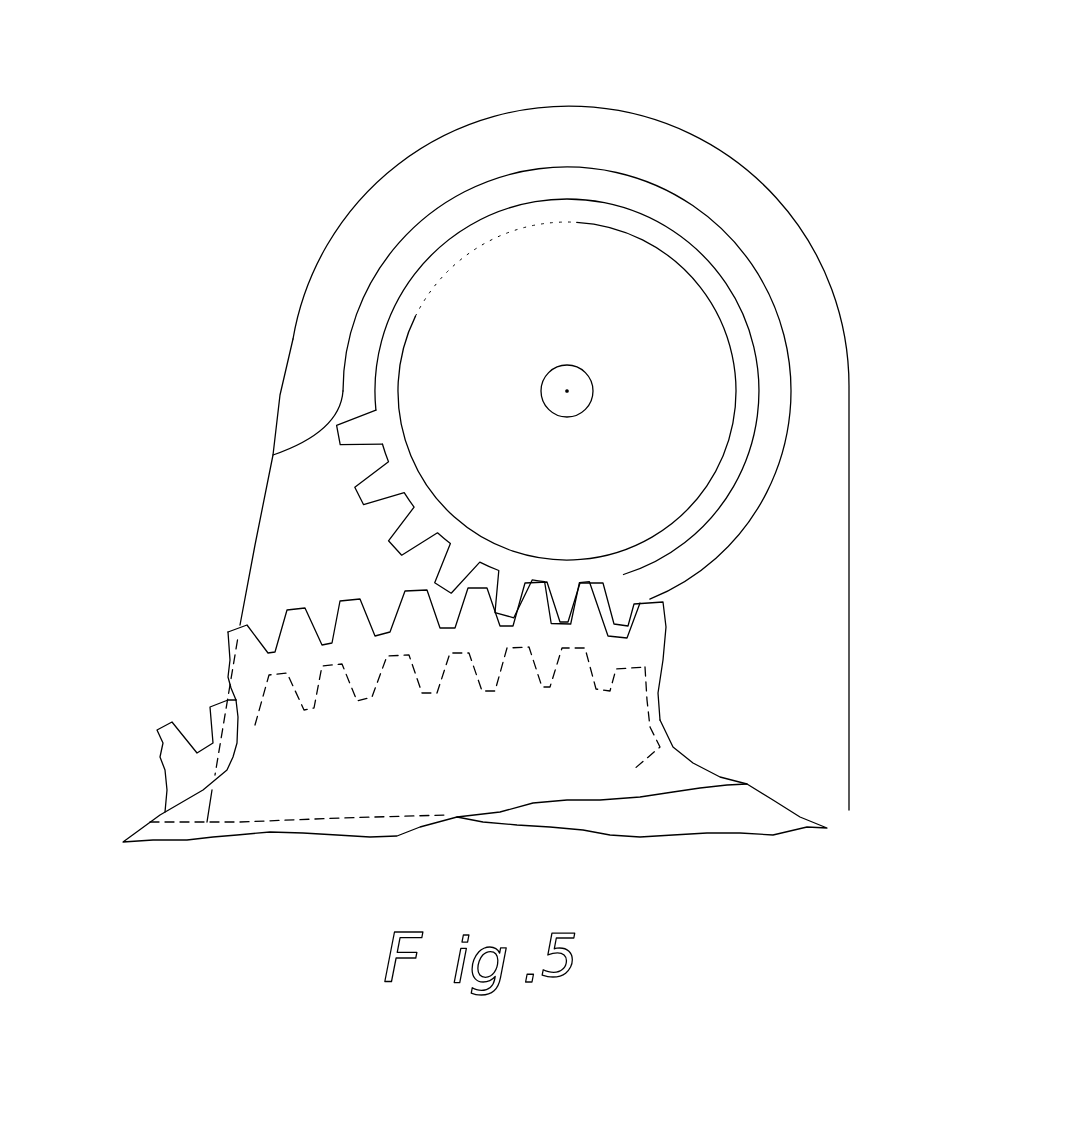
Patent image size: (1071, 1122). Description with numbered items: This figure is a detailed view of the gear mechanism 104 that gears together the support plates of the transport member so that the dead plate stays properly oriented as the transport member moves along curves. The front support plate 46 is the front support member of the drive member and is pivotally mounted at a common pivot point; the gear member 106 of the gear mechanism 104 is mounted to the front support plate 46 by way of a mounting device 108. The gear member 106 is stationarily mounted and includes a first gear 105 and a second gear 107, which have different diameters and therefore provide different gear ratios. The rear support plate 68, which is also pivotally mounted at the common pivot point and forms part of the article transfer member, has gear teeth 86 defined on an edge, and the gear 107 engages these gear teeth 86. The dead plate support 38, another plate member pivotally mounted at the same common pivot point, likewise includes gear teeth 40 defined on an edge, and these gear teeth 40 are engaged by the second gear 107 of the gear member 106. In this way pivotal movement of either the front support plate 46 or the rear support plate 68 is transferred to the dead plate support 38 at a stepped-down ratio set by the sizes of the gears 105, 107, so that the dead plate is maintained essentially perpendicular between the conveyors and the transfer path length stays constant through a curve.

The gear mechanism 104 is at (701, 65).
The front support plate 46 is at (822, 482).
The gear member 106 is at (584, 297).
The mounting device 108 is at (591, 393).
The first gear 105 is at (489, 418).
The second gear 107 is at (322, 437).
The gear teeth 86 is at (228, 664).
The gear teeth 40 is at (163, 752).
The dead plate support 38 is at (667, 753).
The rear support plate 68 is at (253, 790).